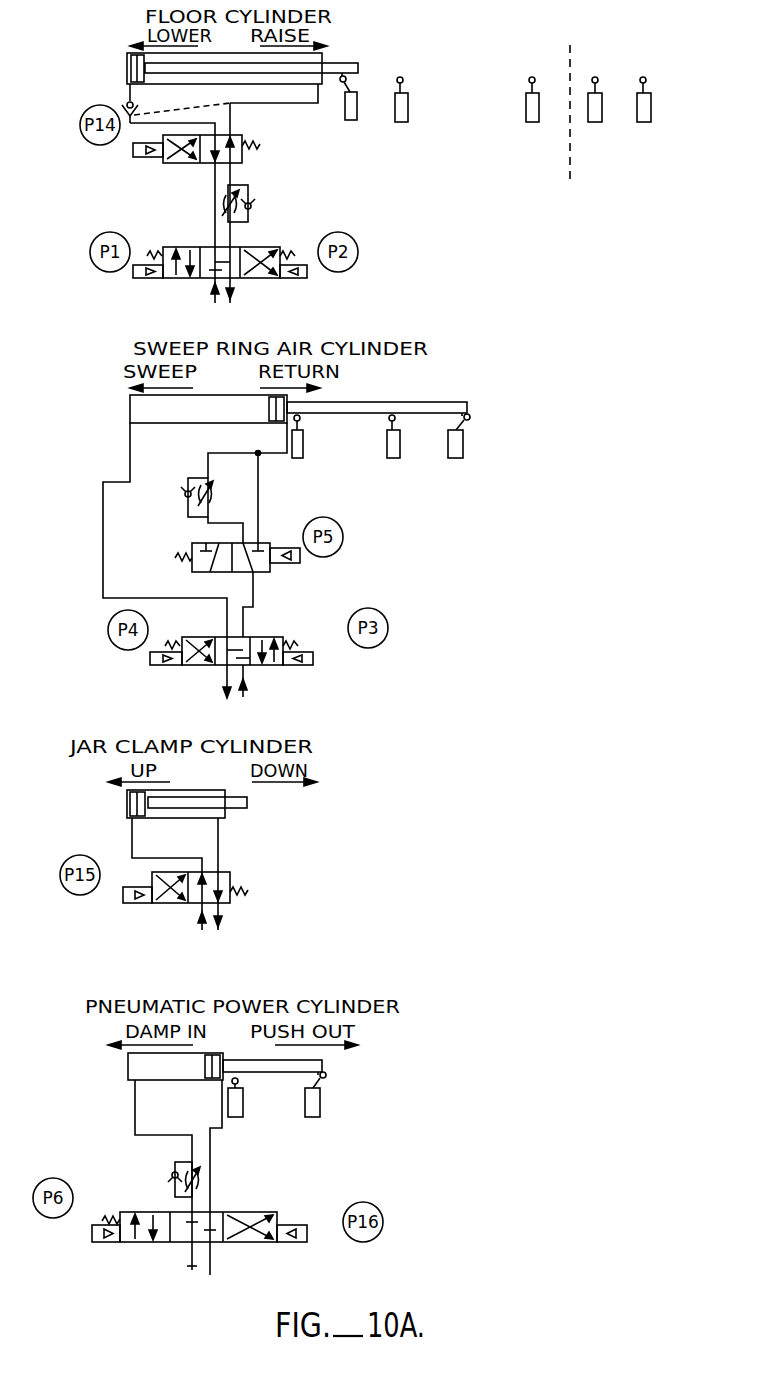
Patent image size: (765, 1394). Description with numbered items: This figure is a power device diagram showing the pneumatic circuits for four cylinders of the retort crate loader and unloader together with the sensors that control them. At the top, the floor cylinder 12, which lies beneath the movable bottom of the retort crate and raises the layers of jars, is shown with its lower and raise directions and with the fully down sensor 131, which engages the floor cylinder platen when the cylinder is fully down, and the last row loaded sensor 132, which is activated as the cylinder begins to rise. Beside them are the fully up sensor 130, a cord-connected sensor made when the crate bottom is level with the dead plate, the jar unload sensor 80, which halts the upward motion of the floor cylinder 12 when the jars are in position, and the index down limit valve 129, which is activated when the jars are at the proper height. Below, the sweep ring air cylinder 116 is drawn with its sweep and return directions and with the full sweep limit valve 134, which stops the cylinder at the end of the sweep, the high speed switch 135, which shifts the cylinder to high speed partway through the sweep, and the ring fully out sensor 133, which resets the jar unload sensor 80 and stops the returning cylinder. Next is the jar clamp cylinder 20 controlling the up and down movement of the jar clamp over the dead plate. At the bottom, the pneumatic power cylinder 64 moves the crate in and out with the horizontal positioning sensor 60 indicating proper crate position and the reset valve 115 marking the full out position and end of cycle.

The floor cylinder 12 is at (346, 19).
The fully down sensor 131 is at (349, 120).
The last row loaded sensor 132 is at (401, 122).
The fully up sensor 130 is at (532, 122).
The jar unload sensor 80 is at (594, 122).
The index down limit valve 129 is at (644, 122).
The sweep ring air cylinder 116 is at (442, 349).
The full sweep limit valve 134 is at (298, 458).
The high speed switch 135 is at (393, 458).
The ring fully out sensor 133 is at (455, 458).
The jar clamp cylinder 20 is at (326, 748).
The pneumatic power cylinder 64 is at (414, 1008).
The horizontal positioning sensor 60 is at (237, 1117).
The reset valve 115 is at (313, 1117).